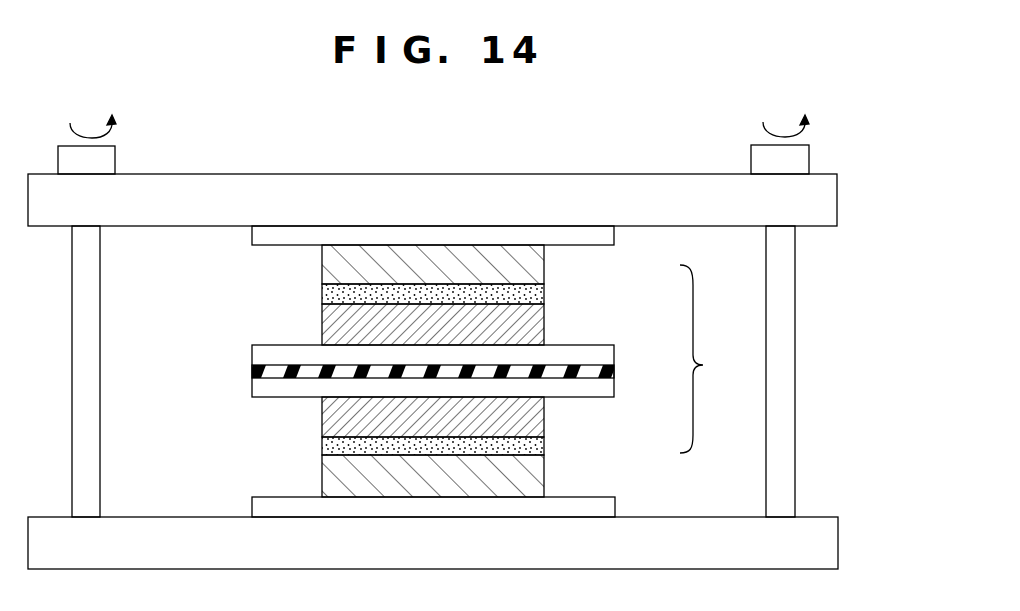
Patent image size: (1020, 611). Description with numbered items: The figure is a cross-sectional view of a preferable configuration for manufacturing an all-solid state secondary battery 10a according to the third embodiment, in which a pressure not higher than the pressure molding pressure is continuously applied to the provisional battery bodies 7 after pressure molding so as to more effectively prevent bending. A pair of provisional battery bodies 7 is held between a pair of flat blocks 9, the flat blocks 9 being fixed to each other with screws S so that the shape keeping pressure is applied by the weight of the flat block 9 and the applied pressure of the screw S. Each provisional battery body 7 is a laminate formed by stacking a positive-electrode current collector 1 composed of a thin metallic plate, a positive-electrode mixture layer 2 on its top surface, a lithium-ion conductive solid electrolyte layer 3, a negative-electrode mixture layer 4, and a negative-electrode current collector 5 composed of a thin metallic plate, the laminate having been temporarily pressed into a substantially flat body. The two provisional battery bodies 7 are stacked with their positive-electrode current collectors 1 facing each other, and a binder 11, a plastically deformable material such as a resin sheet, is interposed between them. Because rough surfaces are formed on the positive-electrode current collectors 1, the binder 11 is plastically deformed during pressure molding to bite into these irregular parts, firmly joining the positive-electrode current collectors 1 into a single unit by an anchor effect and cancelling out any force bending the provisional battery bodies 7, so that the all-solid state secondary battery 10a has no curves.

The positive-electrode current collector 1 is at (258, 388).
The positive-electrode mixture layer 2 is at (336, 322).
The lithium-ion conductive solid electrolyte layer 3 is at (336, 294).
The negative-electrode mixture layer 4 is at (340, 262).
The negative-electrode current collector 5 is at (268, 237).
The provisional battery body 7 is at (606, 295).
The flat block 9 is at (832, 208).
The all-solid state secondary battery 10a is at (714, 359).
The binder 11 is at (610, 372).
The screw S is at (100, 160).